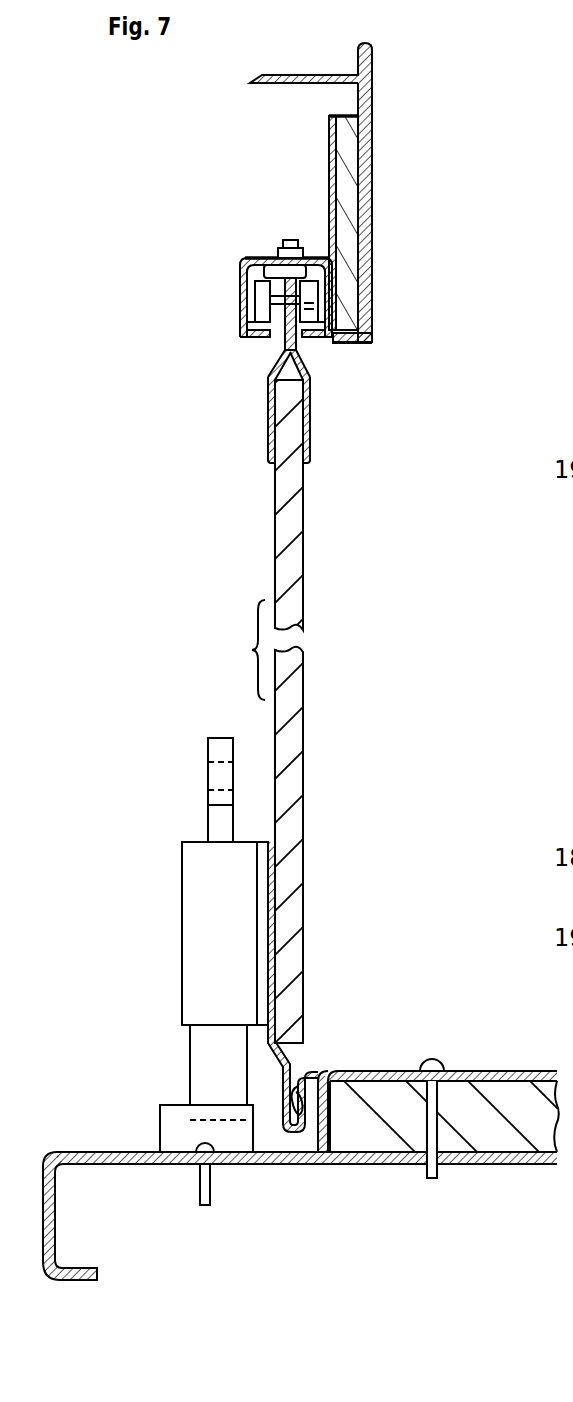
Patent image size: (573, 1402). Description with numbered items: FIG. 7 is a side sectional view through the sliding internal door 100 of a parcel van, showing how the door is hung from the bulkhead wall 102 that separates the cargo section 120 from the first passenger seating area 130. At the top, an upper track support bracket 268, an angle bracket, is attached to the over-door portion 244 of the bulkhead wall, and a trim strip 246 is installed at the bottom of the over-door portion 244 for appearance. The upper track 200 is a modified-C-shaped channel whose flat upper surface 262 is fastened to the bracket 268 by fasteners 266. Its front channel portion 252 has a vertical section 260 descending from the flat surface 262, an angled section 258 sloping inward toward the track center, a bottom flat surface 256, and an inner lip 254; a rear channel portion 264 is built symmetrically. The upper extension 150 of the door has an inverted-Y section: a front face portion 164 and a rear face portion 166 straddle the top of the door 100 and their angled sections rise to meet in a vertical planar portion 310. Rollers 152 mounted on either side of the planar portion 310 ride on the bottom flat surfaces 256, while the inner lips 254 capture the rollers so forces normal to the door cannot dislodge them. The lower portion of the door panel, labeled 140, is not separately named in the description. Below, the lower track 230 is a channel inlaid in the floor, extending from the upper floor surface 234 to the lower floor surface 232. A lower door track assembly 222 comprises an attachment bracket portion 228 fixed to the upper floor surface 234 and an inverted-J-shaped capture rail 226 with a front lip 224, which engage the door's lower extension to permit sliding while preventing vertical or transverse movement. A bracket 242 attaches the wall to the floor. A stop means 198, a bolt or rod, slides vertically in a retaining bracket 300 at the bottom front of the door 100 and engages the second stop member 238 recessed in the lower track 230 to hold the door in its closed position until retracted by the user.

The sliding internal door 100 is at (310, 574).
The bulkhead wall 102 is at (382, 150).
The cargo section 120 is at (390, 526).
The first passenger seating area 130 is at (215, 535).
The lower panel portion 140 is at (305, 680).
The upper extension 150 is at (306, 350).
The roller 152 is at (255, 324).
The front face portion 164 is at (268, 441).
The rear face portion 166 is at (312, 441).
The stop means 198 is at (208, 818).
The upper track 200 is at (244, 256).
The lower door track assembly 222 is at (302, 1065).
The front lip 224 is at (332, 1071).
The capture rail 226 is at (306, 1082).
The attachment bracket portion 228 is at (317, 1124).
The lower track 230 is at (267, 1138).
The lower floor surface 232 is at (478, 1165).
The upper floor surface 234 is at (550, 1071).
The second stop member 238 is at (160, 1122).
The bracket 242 is at (57, 1215).
The over-door portion 244 is at (373, 222).
The trim strip 246 is at (338, 335).
The front channel portion 252 is at (232, 300).
The inner lip 254 is at (282, 352).
The bottom flat surface 256 is at (252, 337).
The angled section 258 is at (247, 308).
The vertical section 260 is at (250, 268).
The flat upper surface 262 is at (255, 286).
The rear channel portion 264 is at (320, 338).
The fasteners 266 is at (292, 247).
The upper track support bracket 268 is at (328, 140).
The retaining bracket 300 is at (182, 848).
The vertical planar portion 310 is at (284, 266).